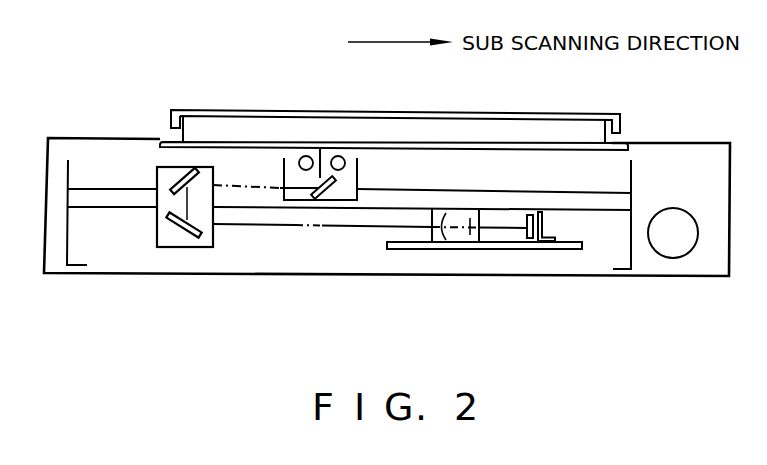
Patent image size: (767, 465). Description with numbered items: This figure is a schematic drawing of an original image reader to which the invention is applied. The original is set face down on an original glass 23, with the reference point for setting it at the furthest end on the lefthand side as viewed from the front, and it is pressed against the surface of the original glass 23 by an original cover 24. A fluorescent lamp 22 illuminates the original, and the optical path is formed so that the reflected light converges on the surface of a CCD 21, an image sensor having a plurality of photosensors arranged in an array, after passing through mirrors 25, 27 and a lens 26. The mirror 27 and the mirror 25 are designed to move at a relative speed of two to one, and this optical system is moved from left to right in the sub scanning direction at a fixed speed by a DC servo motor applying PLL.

The CCD 21 is at (543, 222).
The fluorescent lamp 22 is at (339, 156).
The original glass 23 is at (483, 142).
The original cover 24 is at (578, 113).
The mirror 25 is at (182, 172).
The lens 26 is at (457, 218).
The mirror 27 is at (327, 195).